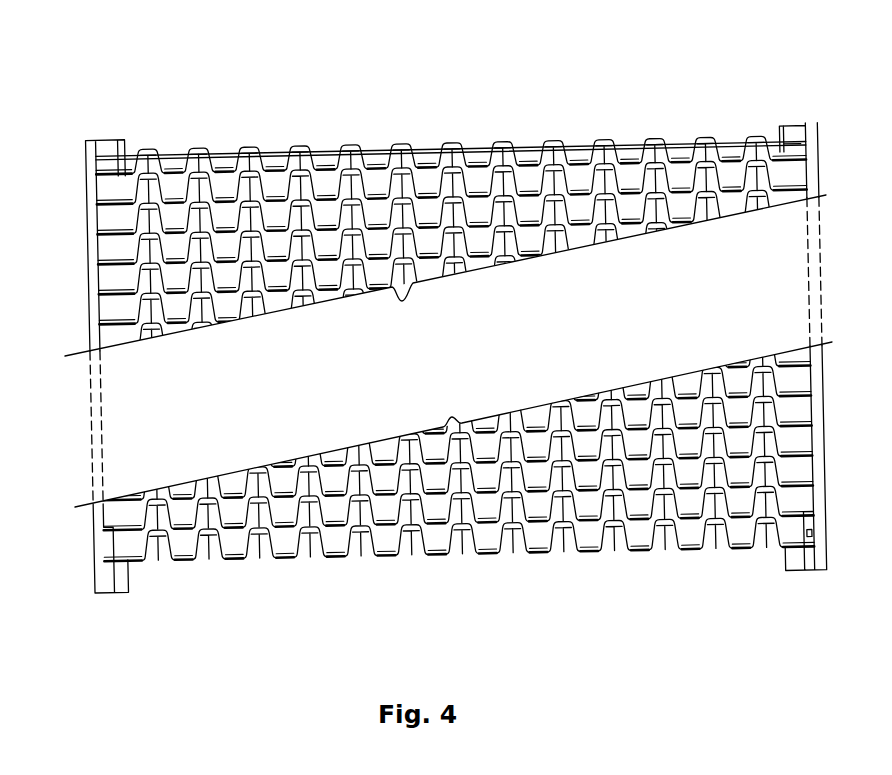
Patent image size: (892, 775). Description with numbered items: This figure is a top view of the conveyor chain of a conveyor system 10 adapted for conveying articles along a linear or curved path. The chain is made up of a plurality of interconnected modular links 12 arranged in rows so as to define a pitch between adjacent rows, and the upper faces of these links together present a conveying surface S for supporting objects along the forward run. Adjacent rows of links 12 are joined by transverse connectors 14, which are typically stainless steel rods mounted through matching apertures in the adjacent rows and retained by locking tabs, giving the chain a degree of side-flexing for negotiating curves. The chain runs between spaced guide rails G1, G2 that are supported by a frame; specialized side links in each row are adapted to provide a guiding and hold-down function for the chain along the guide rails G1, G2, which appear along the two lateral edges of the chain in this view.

The conveyor system 10 is at (436, 357).
The modular links 12 is at (456, 475).
The transverse connectors 14 is at (467, 548).
The conveying surface S is at (430, 183).
The guide rail G1 is at (95, 594).
The guide rail G2 is at (815, 572).